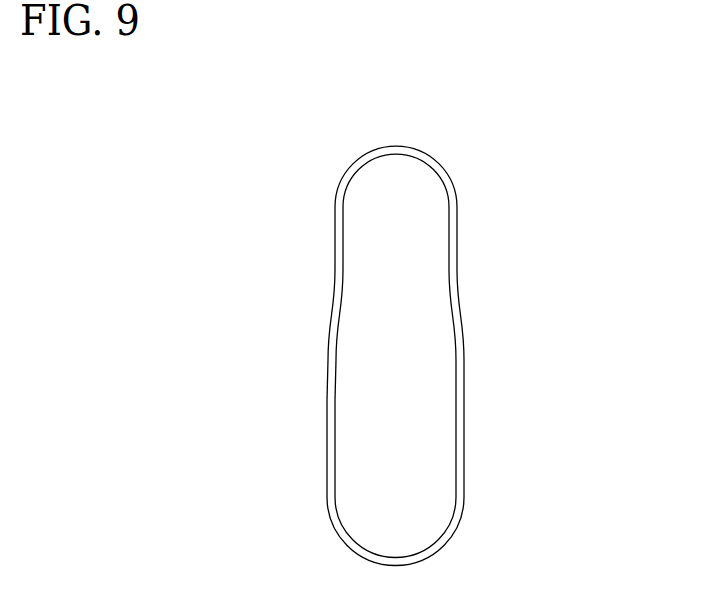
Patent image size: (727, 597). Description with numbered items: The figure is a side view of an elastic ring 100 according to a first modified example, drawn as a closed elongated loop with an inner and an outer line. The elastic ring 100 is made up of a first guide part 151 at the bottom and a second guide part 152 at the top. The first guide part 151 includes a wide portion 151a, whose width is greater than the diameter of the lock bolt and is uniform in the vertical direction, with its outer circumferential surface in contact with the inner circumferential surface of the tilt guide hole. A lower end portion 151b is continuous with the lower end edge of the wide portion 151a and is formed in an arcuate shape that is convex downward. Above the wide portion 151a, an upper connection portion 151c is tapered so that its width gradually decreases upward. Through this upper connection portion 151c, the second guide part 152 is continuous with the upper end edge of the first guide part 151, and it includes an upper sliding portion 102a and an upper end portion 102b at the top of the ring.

The elastic ring 100 is at (406, 142).
The second guide part 152 is at (595, 118).
The upper end portion 102b is at (425, 153).
The upper sliding portion 102a is at (457, 242).
The first guide part 151 is at (588, 315).
The upper connection portion 151c is at (460, 308).
The wide portion 151a is at (464, 427).
The lower end portion 151b is at (445, 552).